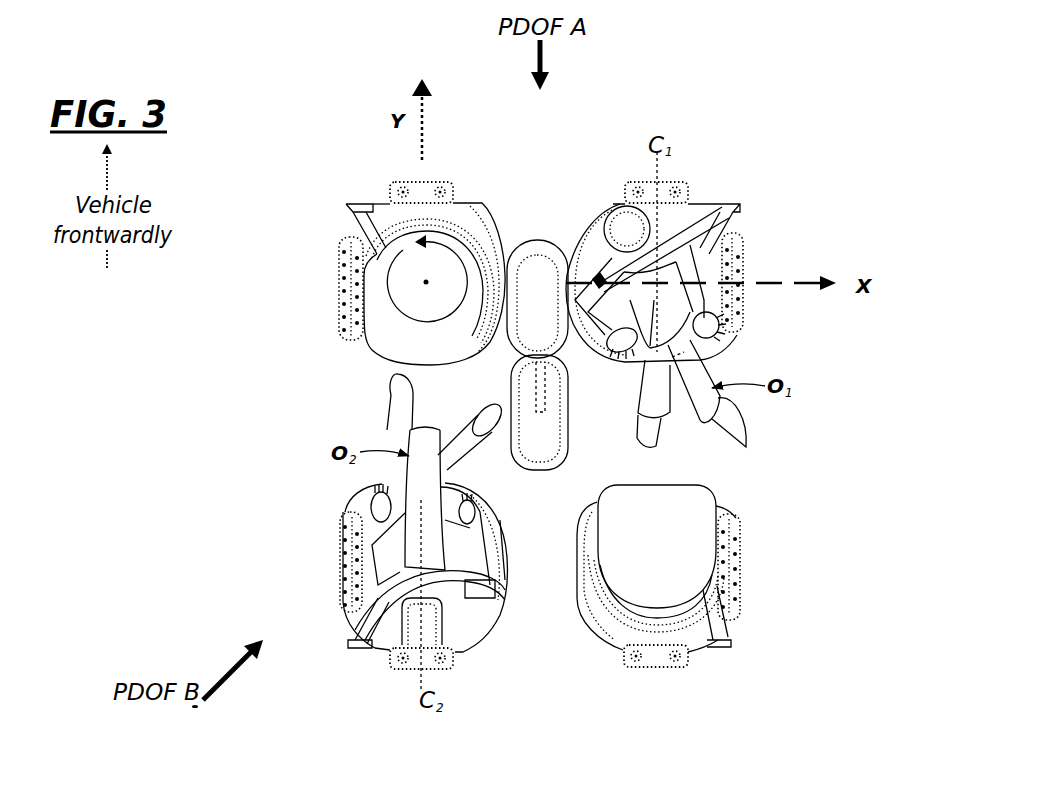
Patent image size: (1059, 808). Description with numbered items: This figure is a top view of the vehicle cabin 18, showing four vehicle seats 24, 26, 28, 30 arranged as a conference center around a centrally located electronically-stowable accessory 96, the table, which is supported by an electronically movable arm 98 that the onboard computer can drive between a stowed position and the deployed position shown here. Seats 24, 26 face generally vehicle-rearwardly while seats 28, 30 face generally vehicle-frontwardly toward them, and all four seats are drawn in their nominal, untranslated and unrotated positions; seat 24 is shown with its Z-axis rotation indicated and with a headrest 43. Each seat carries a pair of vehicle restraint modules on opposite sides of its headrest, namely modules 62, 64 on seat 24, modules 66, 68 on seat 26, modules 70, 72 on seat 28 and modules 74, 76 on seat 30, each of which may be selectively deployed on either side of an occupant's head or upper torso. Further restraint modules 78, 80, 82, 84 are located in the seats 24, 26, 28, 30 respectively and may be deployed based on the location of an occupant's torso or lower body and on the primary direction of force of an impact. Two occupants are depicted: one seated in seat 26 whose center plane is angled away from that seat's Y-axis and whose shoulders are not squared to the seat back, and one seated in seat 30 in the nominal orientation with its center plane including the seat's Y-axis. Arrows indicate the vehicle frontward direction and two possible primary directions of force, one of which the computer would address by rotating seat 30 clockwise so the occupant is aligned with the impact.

The cabin 18 is at (347, 400).
The vehicle seat 24 is at (435, 358).
The vehicle seat 26 is at (732, 222).
The vehicle seat 28 is at (665, 535).
The vehicle seat 30 is at (356, 506).
The headrest 43 is at (449, 196).
The vehicle restraint module 62 is at (396, 185).
The vehicle restraint module 64 is at (448, 185).
The vehicle restraint module 66 is at (630, 184).
The vehicle restraint module 68 is at (684, 184).
The vehicle restraint module 70 is at (690, 658).
The vehicle restraint module 72 is at (624, 658).
The vehicle restraint module 74 is at (455, 660).
The vehicle restraint module 76 is at (391, 660).
The vehicle restraint module 78 is at (352, 244).
The vehicle restraint module 80 is at (742, 318).
The vehicle restraint module 82 is at (734, 532).
The vehicle restraint module 84 is at (346, 568).
The electronically-stowable accessory 96 is at (510, 384).
The electronically movable arm 98 is at (545, 392).